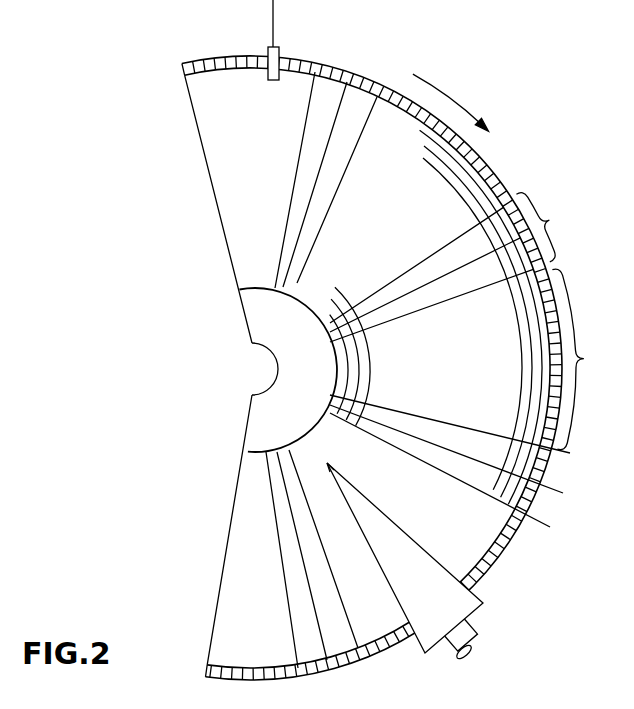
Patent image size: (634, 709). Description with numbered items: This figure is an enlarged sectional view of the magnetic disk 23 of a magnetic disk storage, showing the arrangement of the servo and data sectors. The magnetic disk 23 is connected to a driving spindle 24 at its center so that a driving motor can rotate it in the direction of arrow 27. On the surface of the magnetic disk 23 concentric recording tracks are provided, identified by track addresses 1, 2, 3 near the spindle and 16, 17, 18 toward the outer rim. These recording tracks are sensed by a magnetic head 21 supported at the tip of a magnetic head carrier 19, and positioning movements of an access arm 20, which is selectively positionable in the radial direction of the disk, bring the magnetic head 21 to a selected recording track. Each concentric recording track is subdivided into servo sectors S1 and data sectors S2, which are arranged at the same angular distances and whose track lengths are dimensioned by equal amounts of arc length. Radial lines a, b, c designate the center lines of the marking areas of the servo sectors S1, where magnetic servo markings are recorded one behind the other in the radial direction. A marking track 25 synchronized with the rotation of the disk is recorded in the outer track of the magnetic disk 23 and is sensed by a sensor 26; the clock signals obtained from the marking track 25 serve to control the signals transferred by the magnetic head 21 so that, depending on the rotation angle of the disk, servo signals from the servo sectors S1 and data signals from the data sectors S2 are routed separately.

The track address 1 is at (333, 357).
The track address 2 is at (338, 351).
The track address 3 is at (344, 345).
The track address 16 is at (459, 323).
The track address 17 is at (464, 318).
The track address 18 is at (469, 311).
The magnetic head carrier 19 is at (421, 560).
The access arm 20 is at (478, 640).
The magnetic head 21 is at (329, 462).
The magnetic disk 23 is at (213, 144).
The driving spindle 24 is at (260, 358).
The marking track 25 is at (213, 62).
The sensor 26 is at (279, 50).
The arrow 27 is at (445, 93).
The radial line a is at (457, 429).
The radial line b is at (454, 455).
The radial line c is at (445, 476).
The servo sector S1 is at (549, 227).
The data sector S2 is at (581, 359).